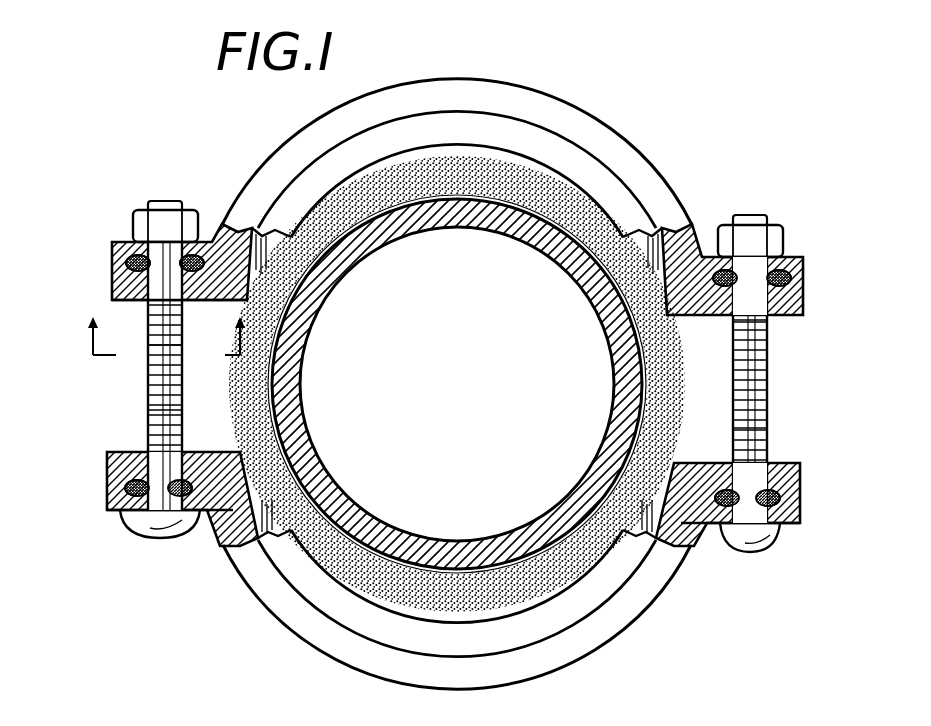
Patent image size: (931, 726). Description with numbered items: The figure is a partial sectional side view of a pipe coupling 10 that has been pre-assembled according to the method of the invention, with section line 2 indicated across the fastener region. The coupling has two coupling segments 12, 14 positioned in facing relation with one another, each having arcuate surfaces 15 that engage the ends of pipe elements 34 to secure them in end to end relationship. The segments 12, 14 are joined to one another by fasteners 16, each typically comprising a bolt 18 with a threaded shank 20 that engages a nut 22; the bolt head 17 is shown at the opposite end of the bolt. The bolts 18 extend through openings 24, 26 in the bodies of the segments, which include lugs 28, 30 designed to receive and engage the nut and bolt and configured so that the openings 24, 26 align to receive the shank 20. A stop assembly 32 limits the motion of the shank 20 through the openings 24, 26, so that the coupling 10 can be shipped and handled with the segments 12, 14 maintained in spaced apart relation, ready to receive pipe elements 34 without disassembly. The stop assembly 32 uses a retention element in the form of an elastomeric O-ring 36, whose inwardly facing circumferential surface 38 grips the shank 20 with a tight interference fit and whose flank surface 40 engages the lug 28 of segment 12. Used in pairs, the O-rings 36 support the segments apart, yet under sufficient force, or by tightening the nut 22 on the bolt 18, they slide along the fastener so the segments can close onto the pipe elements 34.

The section line 2- 2 is at (166, 334).
The pipe coupling 10 is at (688, 118).
The coupling segment 12 is at (557, 96).
The coupling segment 14 is at (365, 672).
The arcuate surfaces 15 is at (469, 148).
The fasteners 16 is at (147, 462).
The bolt head 17 is at (160, 513).
The bolt 18 is at (768, 428).
The threaded shank 20 is at (150, 410).
The nut 22 is at (785, 236).
The opening 24 is at (800, 258).
The opening 26 is at (800, 523).
The lug 28 is at (112, 257).
The lug 30 is at (800, 490).
The stop assembly 32 is at (90, 279).
The pipe elements 34 is at (556, 251).
The O-ring 36 is at (125, 271).
The inwardly facing circumferential surface 38 is at (150, 350).
The flank surface 40 is at (133, 254).